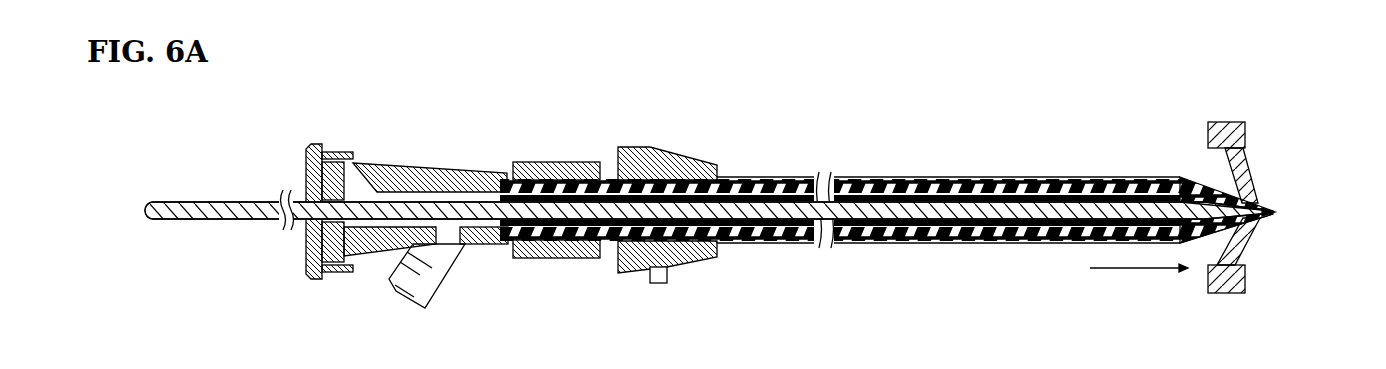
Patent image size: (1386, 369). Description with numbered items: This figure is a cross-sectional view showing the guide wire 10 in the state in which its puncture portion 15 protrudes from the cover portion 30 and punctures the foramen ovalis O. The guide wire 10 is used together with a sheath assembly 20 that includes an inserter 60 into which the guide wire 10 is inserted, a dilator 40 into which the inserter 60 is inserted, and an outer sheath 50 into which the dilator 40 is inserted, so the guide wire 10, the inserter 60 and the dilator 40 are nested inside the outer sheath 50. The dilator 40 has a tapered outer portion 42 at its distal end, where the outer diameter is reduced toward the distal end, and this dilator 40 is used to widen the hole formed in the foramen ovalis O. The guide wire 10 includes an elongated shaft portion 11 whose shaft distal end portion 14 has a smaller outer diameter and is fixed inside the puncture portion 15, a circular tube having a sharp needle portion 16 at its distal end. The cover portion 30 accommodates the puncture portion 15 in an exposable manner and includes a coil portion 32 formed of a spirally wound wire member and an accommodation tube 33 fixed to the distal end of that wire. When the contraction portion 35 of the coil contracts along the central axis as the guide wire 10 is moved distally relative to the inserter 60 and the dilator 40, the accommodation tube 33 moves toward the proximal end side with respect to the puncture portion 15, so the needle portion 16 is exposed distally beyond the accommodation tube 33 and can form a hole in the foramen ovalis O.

The guide wire 10 is at (243, 200).
The inserter 60 is at (482, 165).
The dilator 40 is at (608, 178).
The sheath assembly 20 is at (670, 122).
The outer sheath 50 is at (780, 176).
The shaft portion 11 is at (872, 203).
The coil portion 32 is at (970, 196).
The cover portion 30 is at (1036, 186).
The shaft distal end portion 14 is at (1163, 190).
The foramen ovalis O is at (1242, 162).
The puncture portion 15 is at (1243, 190).
The needle portion 16 is at (1278, 213).
The contraction portion 35 is at (1062, 241).
The accommodation tube 33 is at (1217, 248).
The tapered outer portion 42 is at (1217, 280).